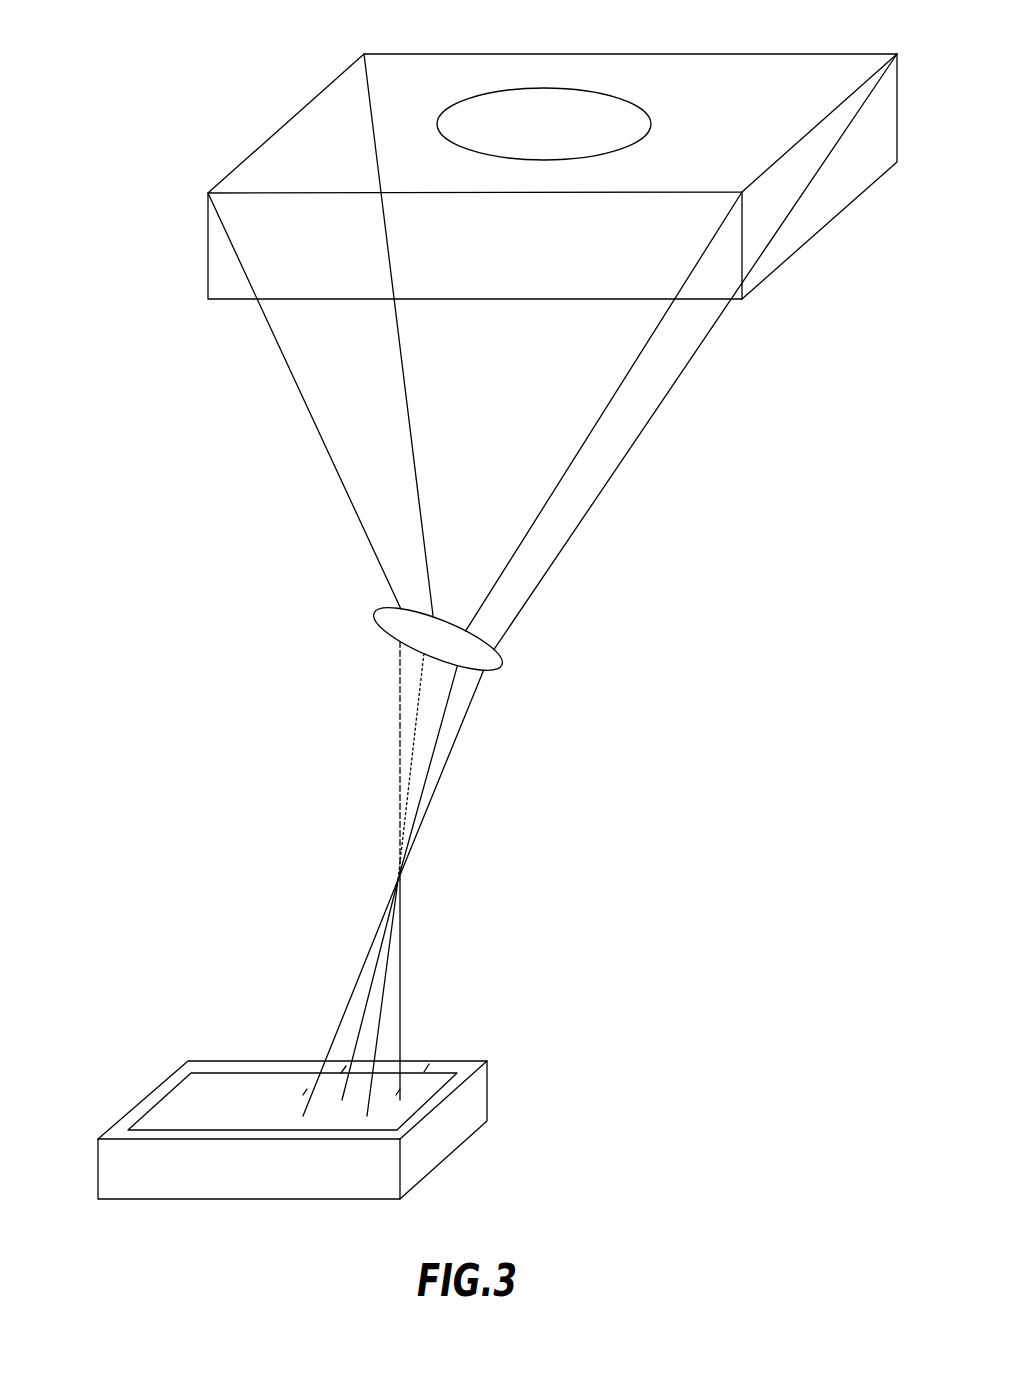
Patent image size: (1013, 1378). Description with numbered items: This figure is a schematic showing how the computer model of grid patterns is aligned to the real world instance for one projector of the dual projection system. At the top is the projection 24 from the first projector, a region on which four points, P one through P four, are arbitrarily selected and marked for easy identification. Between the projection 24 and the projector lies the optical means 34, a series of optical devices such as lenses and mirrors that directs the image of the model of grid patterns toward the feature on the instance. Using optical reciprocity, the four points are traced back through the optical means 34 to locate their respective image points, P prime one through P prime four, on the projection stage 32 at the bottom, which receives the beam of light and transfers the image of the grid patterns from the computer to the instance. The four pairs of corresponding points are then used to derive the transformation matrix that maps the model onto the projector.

The projection 24 is at (253, 78).
The optical means 34 is at (320, 618).
The projection stage 32 is at (147, 1091).